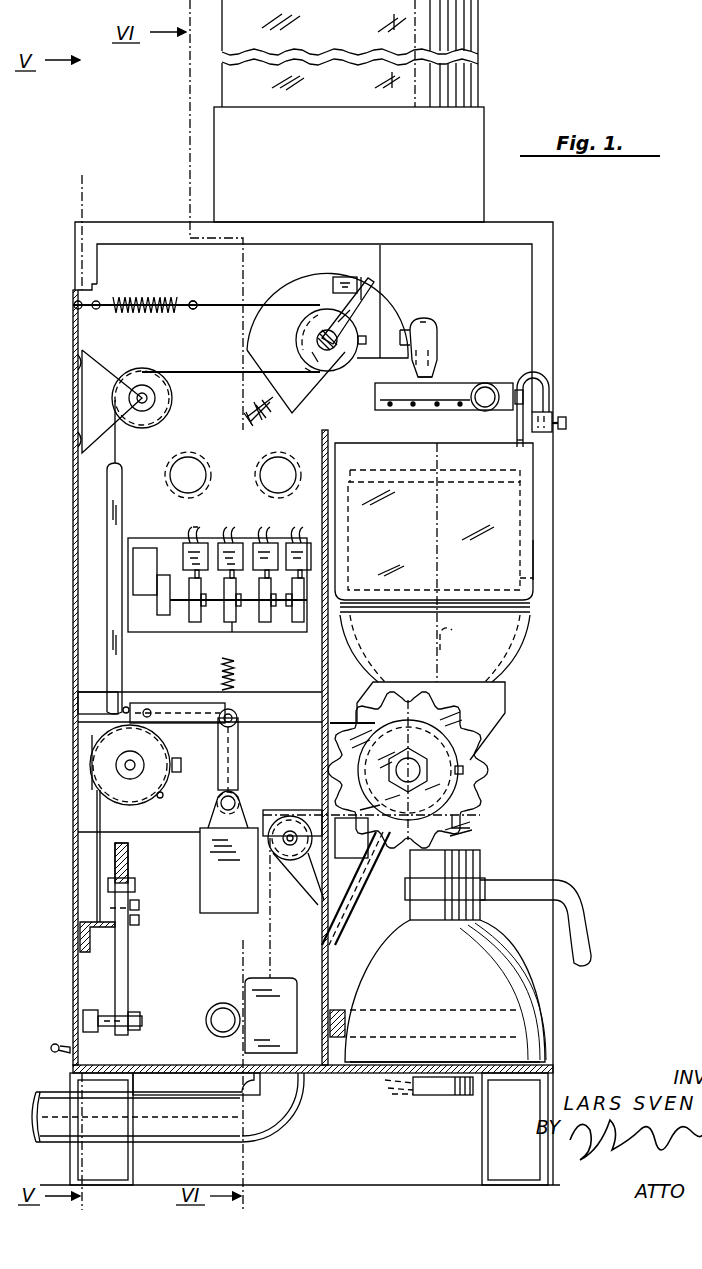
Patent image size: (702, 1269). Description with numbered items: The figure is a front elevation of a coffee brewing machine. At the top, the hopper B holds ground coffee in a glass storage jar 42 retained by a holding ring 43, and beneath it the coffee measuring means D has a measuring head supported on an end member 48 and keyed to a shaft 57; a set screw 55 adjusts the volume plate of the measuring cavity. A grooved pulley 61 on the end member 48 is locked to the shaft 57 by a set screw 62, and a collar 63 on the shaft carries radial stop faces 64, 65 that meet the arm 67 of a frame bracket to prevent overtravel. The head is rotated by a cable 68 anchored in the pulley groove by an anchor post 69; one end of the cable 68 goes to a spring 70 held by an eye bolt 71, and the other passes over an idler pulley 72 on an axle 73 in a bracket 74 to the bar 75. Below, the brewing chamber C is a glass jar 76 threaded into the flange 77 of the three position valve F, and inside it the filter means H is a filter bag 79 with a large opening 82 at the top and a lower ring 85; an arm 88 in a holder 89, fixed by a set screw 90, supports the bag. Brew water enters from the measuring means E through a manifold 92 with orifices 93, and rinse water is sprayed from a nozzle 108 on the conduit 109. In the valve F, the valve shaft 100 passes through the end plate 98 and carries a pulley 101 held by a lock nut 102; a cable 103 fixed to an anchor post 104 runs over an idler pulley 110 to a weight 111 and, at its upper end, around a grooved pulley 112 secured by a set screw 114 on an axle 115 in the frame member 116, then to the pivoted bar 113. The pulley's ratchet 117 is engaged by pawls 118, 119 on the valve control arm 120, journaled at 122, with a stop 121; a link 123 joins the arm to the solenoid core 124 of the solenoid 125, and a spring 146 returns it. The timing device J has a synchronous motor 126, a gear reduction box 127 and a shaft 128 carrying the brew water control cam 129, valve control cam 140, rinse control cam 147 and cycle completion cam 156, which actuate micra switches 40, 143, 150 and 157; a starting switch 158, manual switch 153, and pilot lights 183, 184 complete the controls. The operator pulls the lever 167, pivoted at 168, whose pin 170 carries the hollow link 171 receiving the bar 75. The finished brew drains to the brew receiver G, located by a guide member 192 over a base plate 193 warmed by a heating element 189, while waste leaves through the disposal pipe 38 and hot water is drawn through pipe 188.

The hopper B is at (337, 38).
The glass storage jar 42 is at (240, 34).
The holding ring 43 is at (470, 128).
The spring 70 is at (140, 298).
The flexible chain or cable 68 is at (208, 303).
The eye bolt 71 is at (74, 308).
The bracket 74 is at (95, 396).
The axle 73 is at (150, 395).
The idler pulley 72 is at (170, 408).
The bar 75 is at (122, 483).
The coffee measuring means D is at (402, 292).
The grooved pulley 61 is at (296, 340).
The set screw 62 is at (298, 356).
The shaft 57 is at (312, 372).
The collar 63 is at (340, 375).
The arm 67 is at (372, 280).
The radial stop face 64 is at (324, 304).
The radial stop face 65 is at (345, 318).
The anchor post 69 is at (367, 341).
The end member 48 is at (400, 302).
The set screw 55 is at (250, 410).
The conduit 109 is at (425, 320).
The nozzle 108 is at (438, 378).
The manifold 92 is at (455, 382).
The orifices 93 is at (437, 408).
The brew water measuring means E is at (516, 376).
The arm 88 is at (545, 398).
The holder 89 is at (552, 413).
The set screw 90 is at (567, 423).
The brewing chamber C is at (537, 522).
The filter means H is at (522, 497).
The large opening 82 is at (370, 470).
The glass jar 76 is at (536, 560).
The filter bag 79 is at (536, 580).
The ring 85 is at (437, 641).
The flange 77 is at (503, 688).
The three position valve F is at (472, 786).
The valve shaft 100 is at (418, 760).
The lock nut 102 is at (432, 755).
The anchor post 104 is at (463, 770).
The pulley 101 is at (440, 800).
The valve housing end plate 98 is at (456, 817).
The flexible chain or cable 103 is at (350, 720).
The brew receiver G is at (420, 988).
The semi-circular guide member 192 is at (336, 1012).
The base plate 193 is at (430, 1065).
The electric heating element 189 is at (437, 1094).
The waste disposal pipe 38 is at (285, 1118).
The timing device J is at (182, 625).
The synchronous motor 126 is at (140, 572).
The gear reduction box 127 is at (160, 603).
The micra switch 40 is at (182, 548).
The micra switch 143 is at (218, 528).
The micra switch 150 is at (275, 530).
The brew water control cam 129 is at (197, 622).
The valve control arm 120 is at (232, 628).
The valve control cam 140 is at (236, 622).
The shaft 128 is at (265, 622).
The micra switch 157 is at (305, 558).
The cycle completion cam 156 is at (305, 590).
The pilot light 183 is at (205, 462).
The pilot light 184 is at (282, 458).
The starting switch 158 is at (90, 701).
The pawl 118 is at (140, 702).
The ratchet 117 is at (128, 706).
The pawl 119 is at (165, 730).
The rinse control cam 147 is at (240, 688).
The spring 146 is at (245, 700).
The link 123 is at (240, 749).
The frame member 116 is at (270, 778).
The axle 115 is at (128, 765).
The journal 122 is at (128, 754).
The stop 121 is at (181, 766).
The set screw 114 is at (163, 795).
The grooved pulley 112 is at (136, 804).
The idler pulley 110 is at (292, 830).
The solenoid core 124 is at (210, 834).
The solenoid 125 is at (218, 902).
The pivoted bar 113 is at (80, 940).
The lever 167 is at (128, 960).
The hollow link 171 is at (107, 886).
The pin 170 is at (140, 910).
The pivot 168 is at (106, 1032).
The manually actuated switch 153 is at (55, 1044).
The pipe 188 is at (210, 1012).
The weight 111 is at (258, 1027).